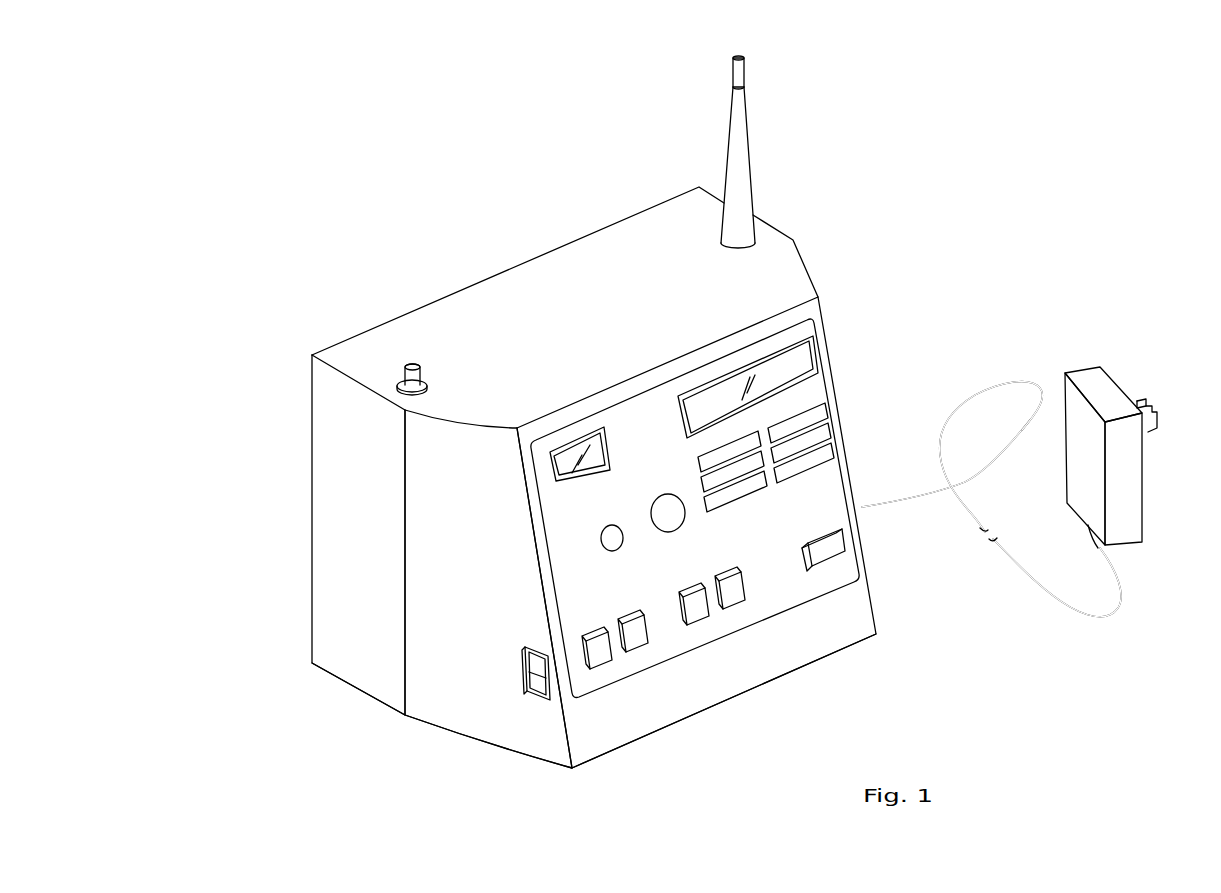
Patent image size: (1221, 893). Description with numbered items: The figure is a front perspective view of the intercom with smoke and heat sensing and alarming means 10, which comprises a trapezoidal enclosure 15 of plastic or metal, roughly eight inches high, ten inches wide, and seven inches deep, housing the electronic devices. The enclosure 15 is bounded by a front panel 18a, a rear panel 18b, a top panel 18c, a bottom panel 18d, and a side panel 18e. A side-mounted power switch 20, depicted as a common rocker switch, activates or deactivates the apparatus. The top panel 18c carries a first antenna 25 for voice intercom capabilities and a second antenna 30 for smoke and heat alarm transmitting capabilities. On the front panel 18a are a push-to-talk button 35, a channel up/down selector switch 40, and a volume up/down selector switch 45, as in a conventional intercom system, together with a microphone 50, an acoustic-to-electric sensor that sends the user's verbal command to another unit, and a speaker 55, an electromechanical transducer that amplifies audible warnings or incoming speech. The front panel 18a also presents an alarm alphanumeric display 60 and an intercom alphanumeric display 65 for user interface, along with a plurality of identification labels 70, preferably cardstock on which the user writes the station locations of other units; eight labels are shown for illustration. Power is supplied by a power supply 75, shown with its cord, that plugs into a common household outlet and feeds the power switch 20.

The intercom with smoke and heat sensing and alarming means 10 is at (257, 112).
The enclosure 15 is at (282, 408).
The front panel 18a is at (835, 485).
The rear panel 18b is at (312, 540).
The top panel 18c is at (425, 312).
The bottom panel 18d is at (447, 731).
The side panel 18e is at (355, 672).
The power switch 20 is at (531, 683).
The first antenna 25 is at (405, 365).
The second antenna 30 is at (742, 125).
The push-to-talk button 35 is at (838, 553).
The channel up/down selector switch 40 is at (592, 657).
The volume up/down selector switch 45 is at (694, 608).
The microphone 50 is at (598, 540).
The speaker 55 is at (663, 500).
The alarm alphanumeric display 60 is at (806, 352).
The intercom alphanumeric display 65 is at (596, 448).
The identification labels 70 is at (803, 447).
The power supply 75 is at (1127, 495).